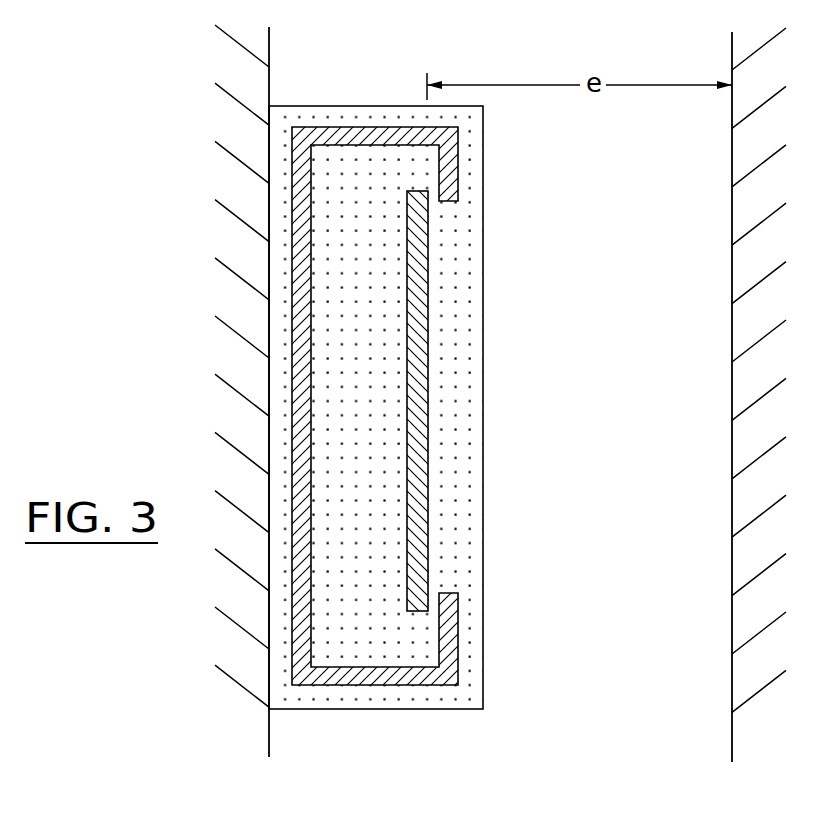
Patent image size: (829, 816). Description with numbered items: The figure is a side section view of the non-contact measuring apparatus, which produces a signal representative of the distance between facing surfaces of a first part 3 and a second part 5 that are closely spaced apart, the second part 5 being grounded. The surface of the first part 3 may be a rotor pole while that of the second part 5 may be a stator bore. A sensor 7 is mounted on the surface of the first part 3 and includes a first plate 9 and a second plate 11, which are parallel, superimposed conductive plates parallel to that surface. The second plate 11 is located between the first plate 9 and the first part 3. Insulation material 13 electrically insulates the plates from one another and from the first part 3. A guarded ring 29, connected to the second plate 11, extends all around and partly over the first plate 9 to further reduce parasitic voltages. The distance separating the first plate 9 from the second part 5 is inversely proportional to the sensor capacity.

The first part 3 is at (269, 43).
The second part 5 is at (732, 55).
The sensor 7 is at (368, 437).
The first plate 9 is at (422, 352).
The second plate 11 is at (302, 366).
The insulation material 13 is at (475, 237).
The guarded ring 29 is at (455, 157).